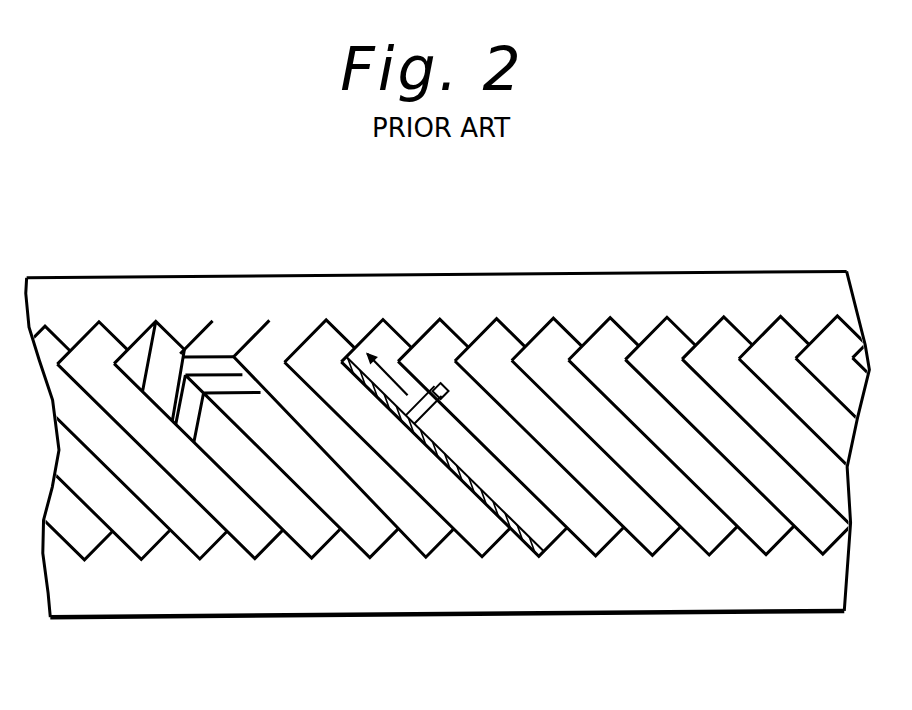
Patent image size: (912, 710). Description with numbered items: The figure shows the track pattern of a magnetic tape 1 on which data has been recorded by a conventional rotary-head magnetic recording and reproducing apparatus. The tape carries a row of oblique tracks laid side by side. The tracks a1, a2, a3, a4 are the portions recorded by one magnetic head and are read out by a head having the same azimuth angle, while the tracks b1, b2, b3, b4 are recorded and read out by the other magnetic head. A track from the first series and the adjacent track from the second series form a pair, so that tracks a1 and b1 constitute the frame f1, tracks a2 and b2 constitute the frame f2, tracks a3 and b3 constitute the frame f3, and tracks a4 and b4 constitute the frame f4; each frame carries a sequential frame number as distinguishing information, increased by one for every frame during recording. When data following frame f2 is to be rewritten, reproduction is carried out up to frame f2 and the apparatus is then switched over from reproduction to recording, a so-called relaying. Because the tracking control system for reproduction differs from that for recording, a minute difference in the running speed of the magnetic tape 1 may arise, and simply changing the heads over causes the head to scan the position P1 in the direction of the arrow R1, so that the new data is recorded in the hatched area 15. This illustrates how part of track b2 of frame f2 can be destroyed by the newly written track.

The magnetic tape 1 is at (133, 587).
The area shown with oblique lines 15 is at (520, 553).
The track a1 is at (320, 529).
The track b1 is at (368, 529).
The track a2 is at (428, 530).
The track b2 is at (485, 530).
The track a3 is at (600, 531).
The track b3 is at (660, 529).
The track a4 is at (682, 538).
The track b4 is at (717, 534).
The frame f1 is at (257, 514).
The frame f2 is at (382, 514).
The frame f3 is at (544, 513).
The frame f4 is at (686, 513).
The arrow R1 is at (393, 372).
The position P1 is at (440, 385).